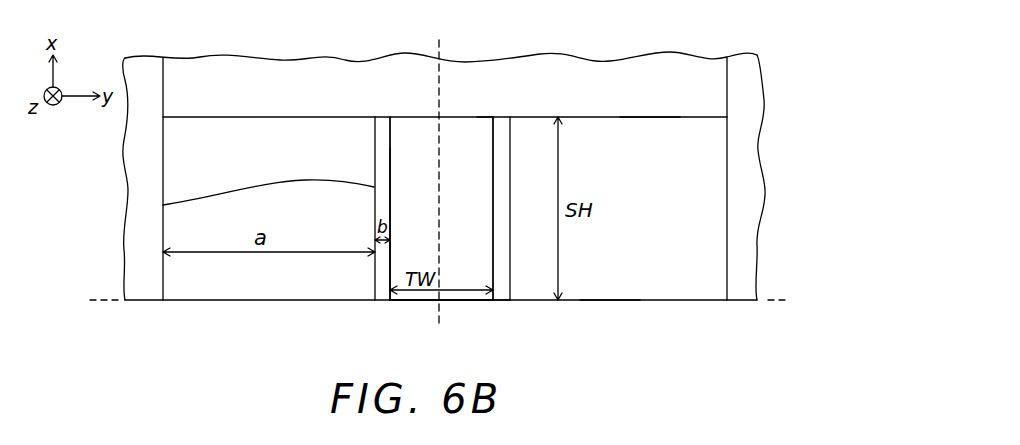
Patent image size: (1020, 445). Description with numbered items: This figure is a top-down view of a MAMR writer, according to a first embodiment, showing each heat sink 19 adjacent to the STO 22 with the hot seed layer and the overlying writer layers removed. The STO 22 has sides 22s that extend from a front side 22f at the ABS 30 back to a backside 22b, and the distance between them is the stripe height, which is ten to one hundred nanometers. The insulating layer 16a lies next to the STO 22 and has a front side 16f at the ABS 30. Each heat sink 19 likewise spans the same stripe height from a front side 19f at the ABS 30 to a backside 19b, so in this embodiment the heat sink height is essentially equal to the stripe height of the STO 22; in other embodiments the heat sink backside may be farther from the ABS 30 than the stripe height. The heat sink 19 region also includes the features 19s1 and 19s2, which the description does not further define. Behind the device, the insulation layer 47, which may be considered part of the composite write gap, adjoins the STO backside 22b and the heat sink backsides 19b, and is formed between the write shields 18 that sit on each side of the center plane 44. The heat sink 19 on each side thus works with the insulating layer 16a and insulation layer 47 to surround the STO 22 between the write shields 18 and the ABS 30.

The insulation layer 47 is at (207, 72).
The sides of STO 22s is at (390, 148).
The STO 22 is at (412, 133).
The center plane 44 is at (441, 186).
The backside of STO 22b is at (477, 117).
The insulating layer 16a is at (500, 137).
The heat sink backside 19b is at (640, 117).
The first surface of layer 19 19s1 is at (163, 141).
The second surface of layer 19 19s2 is at (163, 205).
The write shield 18 is at (140, 249).
The ABS 30 is at (437, 300).
The heat sink 19 is at (220, 285).
The front side of STO 22f is at (477, 300).
The front side of insulating layer 16f is at (503, 300).
The front side of heat sink 19f is at (602, 300).